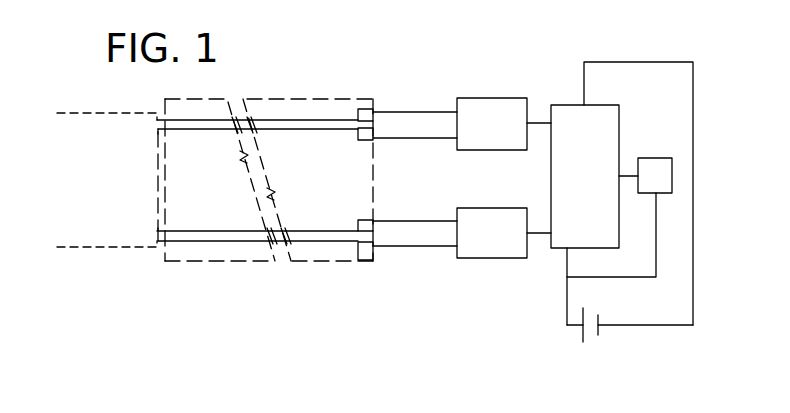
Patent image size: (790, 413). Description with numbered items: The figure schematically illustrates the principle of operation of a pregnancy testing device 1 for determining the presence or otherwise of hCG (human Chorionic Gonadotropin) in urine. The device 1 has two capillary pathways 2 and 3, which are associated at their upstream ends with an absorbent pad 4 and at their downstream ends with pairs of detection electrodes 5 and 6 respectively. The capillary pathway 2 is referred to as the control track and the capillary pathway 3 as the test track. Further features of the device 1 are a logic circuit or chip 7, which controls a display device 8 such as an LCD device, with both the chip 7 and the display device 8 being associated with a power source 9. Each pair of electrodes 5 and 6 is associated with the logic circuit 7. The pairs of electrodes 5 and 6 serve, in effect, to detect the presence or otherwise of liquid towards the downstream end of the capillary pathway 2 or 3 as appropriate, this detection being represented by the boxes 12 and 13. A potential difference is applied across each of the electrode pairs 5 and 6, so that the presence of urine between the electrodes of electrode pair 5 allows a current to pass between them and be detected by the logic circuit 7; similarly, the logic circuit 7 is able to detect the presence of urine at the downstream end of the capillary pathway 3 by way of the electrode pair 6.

The pregnancy testing device 1 is at (411, 74).
The capillary pathway 2 is at (295, 124).
The capillary pathway 3 is at (322, 235).
The absorbent pad 4 is at (112, 132).
The pair of detection electrodes 5 is at (358, 113).
The pair of detection electrodes 6 is at (367, 247).
The logic circuit 7 is at (608, 120).
The display device 8 is at (665, 168).
The power source 9 is at (577, 330).
The box 12 is at (487, 98).
The box 13 is at (483, 259).